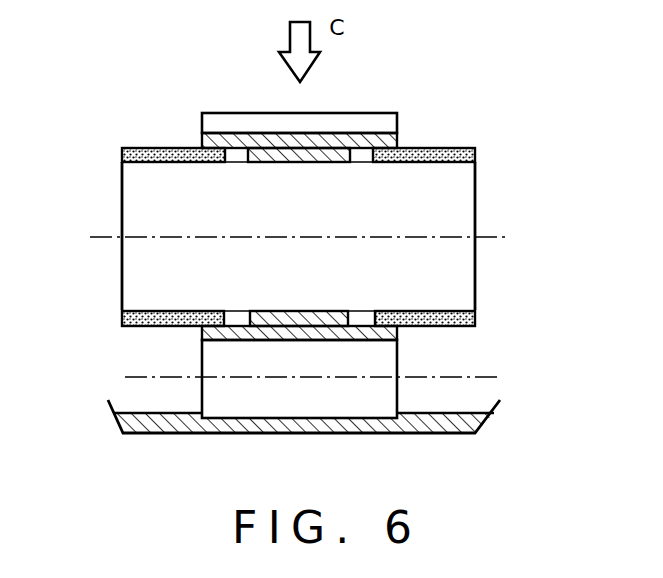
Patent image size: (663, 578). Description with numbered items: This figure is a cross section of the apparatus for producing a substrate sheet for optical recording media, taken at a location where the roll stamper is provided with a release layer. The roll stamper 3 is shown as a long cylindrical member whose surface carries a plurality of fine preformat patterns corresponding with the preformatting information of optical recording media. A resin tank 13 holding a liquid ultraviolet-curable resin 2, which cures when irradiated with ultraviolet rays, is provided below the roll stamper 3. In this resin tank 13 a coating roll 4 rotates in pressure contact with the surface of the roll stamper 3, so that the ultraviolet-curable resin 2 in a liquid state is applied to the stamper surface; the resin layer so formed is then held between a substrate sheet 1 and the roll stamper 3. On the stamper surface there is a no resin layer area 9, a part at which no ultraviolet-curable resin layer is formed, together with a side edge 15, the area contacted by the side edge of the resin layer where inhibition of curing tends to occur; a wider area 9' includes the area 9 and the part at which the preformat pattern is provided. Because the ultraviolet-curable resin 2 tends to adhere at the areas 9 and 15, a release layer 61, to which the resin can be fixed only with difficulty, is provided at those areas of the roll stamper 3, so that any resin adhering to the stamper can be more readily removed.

The substrate sheet 1 is at (338, 165).
The ultraviolet-curable resin 2 is at (331, 303).
The roll stamper 3 is at (122, 195).
The coating roll 4 is at (385, 396).
The no resin layer area 9 is at (361, 190).
The area including the no resin layer area and the preformat pattern 9' is at (299, 287).
The resin tank 13 is at (490, 415).
The side edge 15 is at (380, 224).
The release layer 61 is at (477, 312).